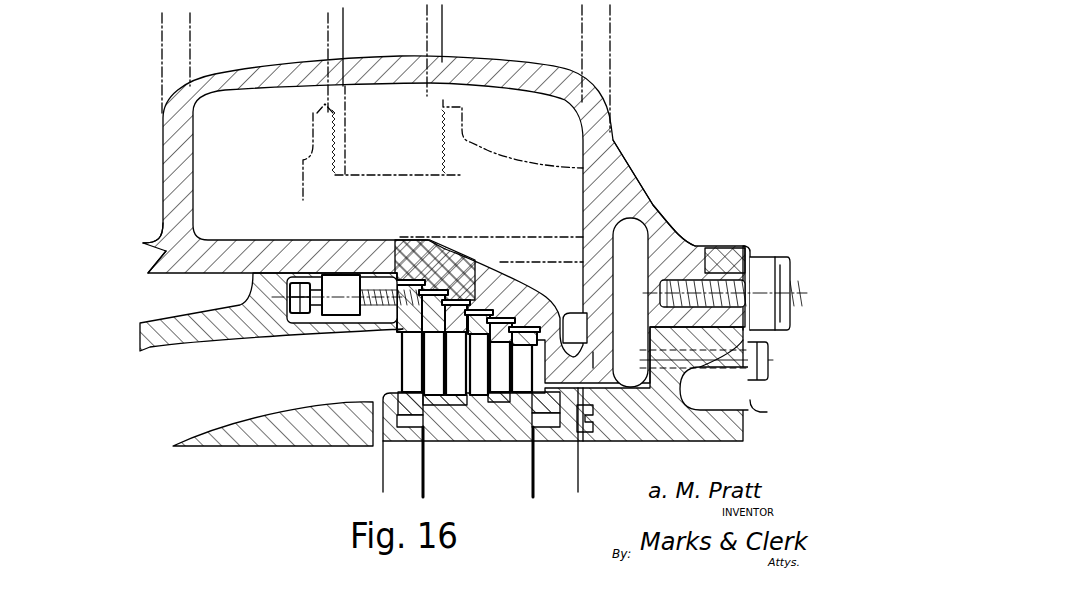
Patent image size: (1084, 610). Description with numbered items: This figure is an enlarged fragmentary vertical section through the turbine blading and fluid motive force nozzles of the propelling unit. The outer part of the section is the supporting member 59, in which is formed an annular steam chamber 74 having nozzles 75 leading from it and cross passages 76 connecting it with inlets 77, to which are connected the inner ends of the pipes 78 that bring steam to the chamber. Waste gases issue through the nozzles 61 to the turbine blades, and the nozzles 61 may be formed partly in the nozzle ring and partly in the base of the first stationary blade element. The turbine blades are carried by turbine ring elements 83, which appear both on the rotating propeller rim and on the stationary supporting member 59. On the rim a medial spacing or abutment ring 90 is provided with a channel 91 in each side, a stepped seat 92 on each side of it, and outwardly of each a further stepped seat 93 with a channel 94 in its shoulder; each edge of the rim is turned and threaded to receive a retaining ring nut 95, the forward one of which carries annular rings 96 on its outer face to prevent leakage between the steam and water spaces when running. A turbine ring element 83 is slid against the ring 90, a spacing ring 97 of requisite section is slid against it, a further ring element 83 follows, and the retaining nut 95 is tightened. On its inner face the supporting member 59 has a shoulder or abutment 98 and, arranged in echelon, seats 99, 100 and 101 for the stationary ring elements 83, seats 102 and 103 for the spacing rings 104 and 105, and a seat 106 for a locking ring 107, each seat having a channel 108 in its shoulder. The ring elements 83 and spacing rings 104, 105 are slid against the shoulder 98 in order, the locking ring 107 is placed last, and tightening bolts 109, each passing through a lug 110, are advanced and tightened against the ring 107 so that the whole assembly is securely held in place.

The supporting member 59 is at (147, 258).
The nozzles 61 is at (532, 125).
The annular steam chamber 74 is at (668, 222).
The nozzles 75 is at (640, 390).
The cross passages 76 is at (603, 182).
The inlets 77 is at (313, 151).
The pipes 78 is at (333, 38).
The turbine ring element 83 is at (494, 354).
The abutment ring 90 is at (480, 398).
The channel 91 is at (466, 420).
The stepped seat 92 is at (452, 424).
The stepped seat 93 is at (412, 446).
The channel 94 is at (478, 459).
The retaining ring nut 95 is at (386, 440).
The annular rings 96 is at (640, 440).
The spacing ring 97 is at (594, 446).
The shoulder or abutment 98 is at (538, 320).
The seat 99 is at (524, 306).
The seat 100 is at (485, 302).
The seat 101 is at (450, 305).
The seat 102 is at (502, 296).
The seat 103 is at (458, 300).
The spacing ring 104 is at (508, 304).
The spacing ring 105 is at (470, 302).
The seat 106 is at (408, 264).
The locking ring 107 is at (418, 296).
The channel 108 is at (566, 276).
The tightening bolts 109 is at (382, 310).
The lug 110 is at (338, 300).